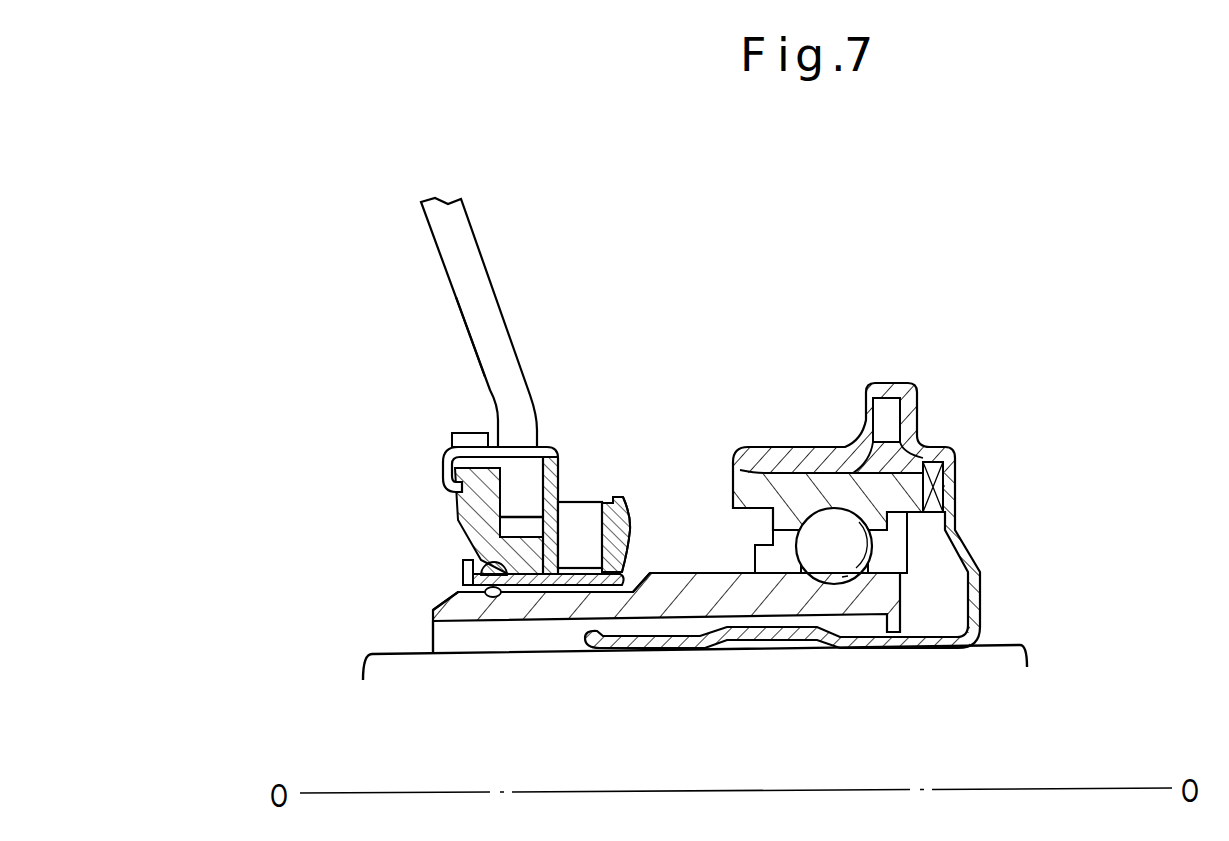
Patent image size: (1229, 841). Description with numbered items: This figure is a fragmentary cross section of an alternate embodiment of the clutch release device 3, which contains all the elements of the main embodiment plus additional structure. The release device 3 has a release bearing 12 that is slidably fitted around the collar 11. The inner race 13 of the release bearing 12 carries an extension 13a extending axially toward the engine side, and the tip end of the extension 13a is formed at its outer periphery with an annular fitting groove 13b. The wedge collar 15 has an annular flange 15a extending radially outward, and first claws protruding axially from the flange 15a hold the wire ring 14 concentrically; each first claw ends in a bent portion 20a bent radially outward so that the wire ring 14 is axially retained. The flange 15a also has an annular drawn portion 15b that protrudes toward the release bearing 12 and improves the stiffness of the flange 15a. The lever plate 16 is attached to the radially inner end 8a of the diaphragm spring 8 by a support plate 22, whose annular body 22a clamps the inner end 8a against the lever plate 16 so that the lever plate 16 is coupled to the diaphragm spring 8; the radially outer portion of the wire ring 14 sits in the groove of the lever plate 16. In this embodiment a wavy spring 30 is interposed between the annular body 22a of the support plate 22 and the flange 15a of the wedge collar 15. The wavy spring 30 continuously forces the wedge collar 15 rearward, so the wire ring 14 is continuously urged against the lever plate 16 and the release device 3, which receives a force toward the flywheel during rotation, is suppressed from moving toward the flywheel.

The release device 3 is at (708, 358).
The diaphragm spring 8 is at (488, 241).
The radially inner end 8a is at (482, 307).
The collar 11 is at (1007, 643).
The release bearing 12 is at (736, 528).
The inner race 13 is at (790, 608).
The extension 13a is at (556, 603).
The annular fitting groove 13b is at (503, 586).
The wire ring 14 is at (478, 590).
The wedge collar 15 is at (624, 488).
The annular flange 15a is at (623, 507).
The annular drawn portion 15b is at (630, 528).
The lever plate 16 is at (463, 516).
The bent portion 20a is at (467, 563).
The support plate 22 is at (517, 446).
The annular body 22a is at (560, 474).
The wavy spring 30 is at (580, 547).